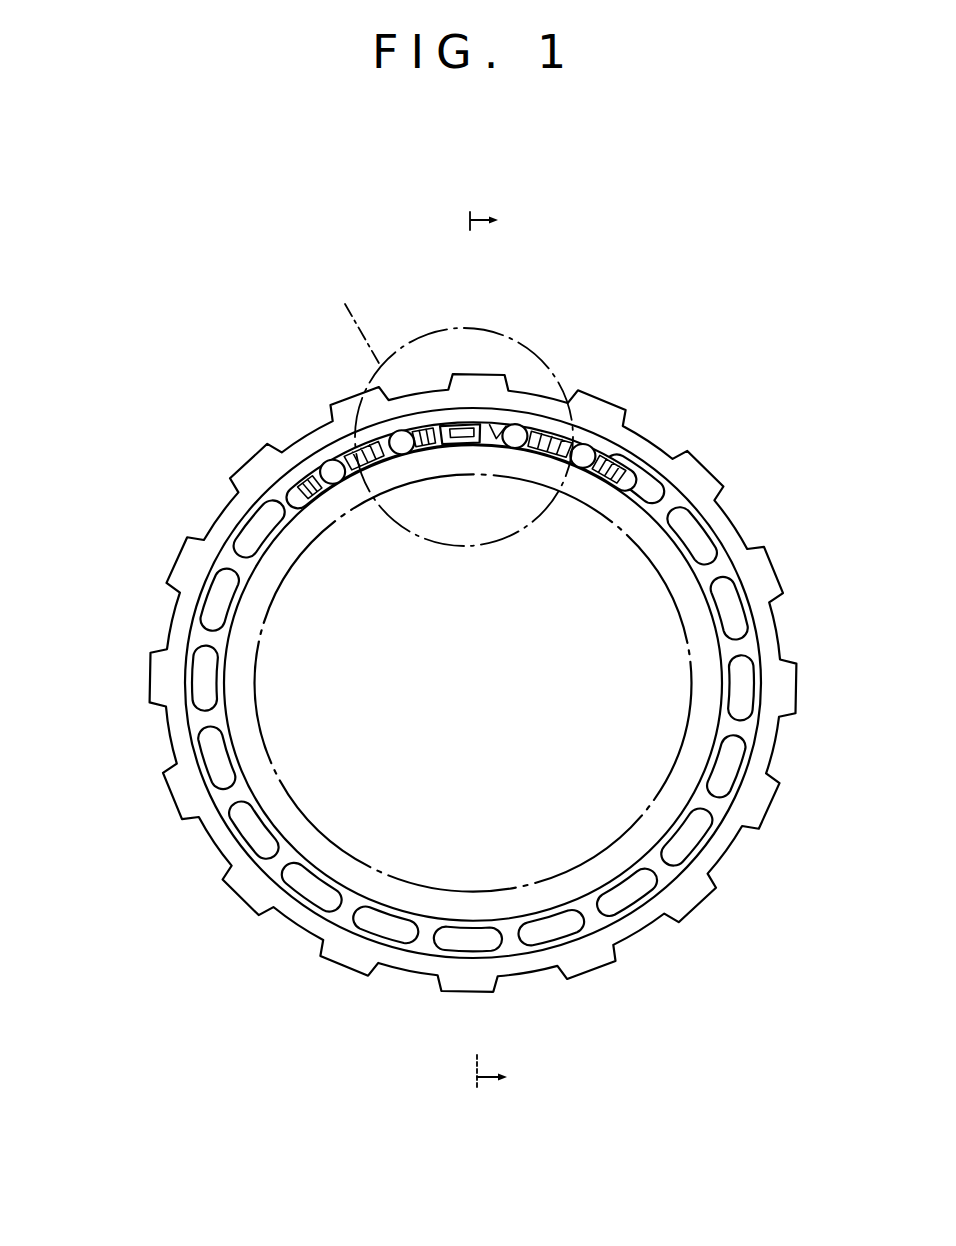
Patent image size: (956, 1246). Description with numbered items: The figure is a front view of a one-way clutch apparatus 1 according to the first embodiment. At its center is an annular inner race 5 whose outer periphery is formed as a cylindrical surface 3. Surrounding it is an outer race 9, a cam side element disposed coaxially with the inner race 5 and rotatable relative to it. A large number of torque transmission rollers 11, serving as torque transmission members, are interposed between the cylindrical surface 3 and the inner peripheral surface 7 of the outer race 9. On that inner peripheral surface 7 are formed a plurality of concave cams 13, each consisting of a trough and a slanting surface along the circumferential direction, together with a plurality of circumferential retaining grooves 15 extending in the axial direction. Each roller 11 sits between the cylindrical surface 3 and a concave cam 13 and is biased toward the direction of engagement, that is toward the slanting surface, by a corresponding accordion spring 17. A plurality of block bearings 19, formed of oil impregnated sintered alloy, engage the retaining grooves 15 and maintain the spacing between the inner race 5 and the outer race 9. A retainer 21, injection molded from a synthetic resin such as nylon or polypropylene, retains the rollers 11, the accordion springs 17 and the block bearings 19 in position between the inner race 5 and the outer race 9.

The one-way clutch apparatus 1 is at (105, 364).
The cylindrical surface 3 is at (394, 489).
The inner race 5 is at (664, 591).
The inner peripheral surface 7 is at (357, 445).
The outer race 9 is at (738, 509).
The torque transmission roller 11 is at (526, 421).
The concave cam 13 is at (600, 455).
The circumferential retaining groove 15 is at (446, 420).
The accordion spring 17 is at (565, 432).
The block bearing 19 is at (466, 420).
The retainer 21 is at (186, 637).